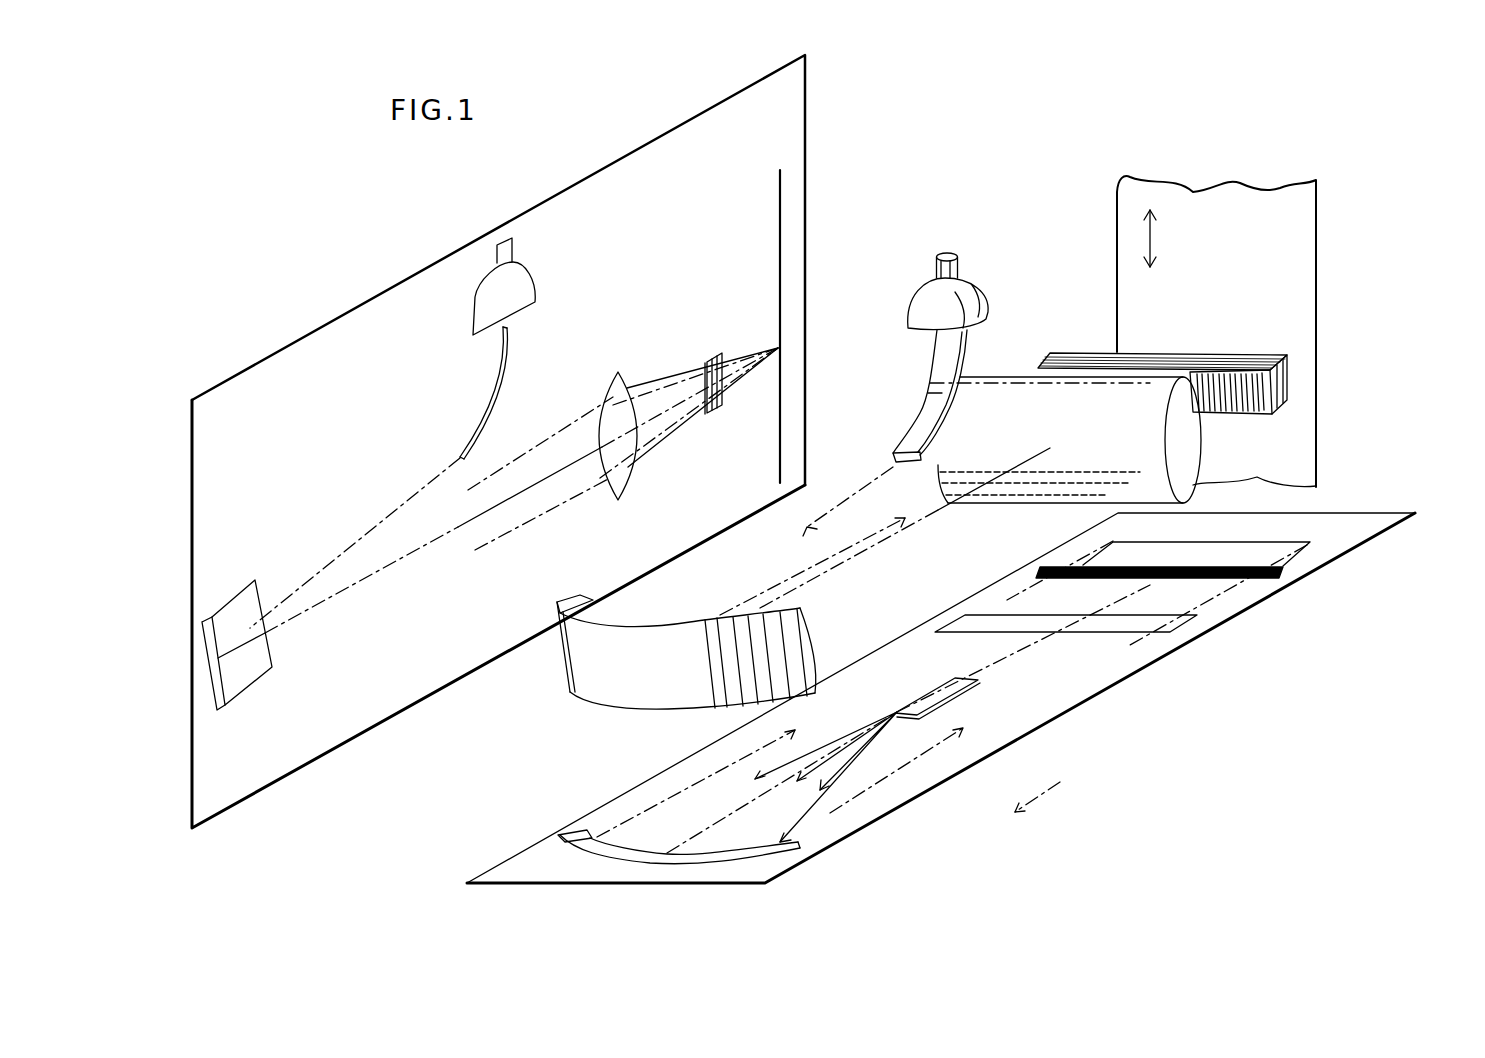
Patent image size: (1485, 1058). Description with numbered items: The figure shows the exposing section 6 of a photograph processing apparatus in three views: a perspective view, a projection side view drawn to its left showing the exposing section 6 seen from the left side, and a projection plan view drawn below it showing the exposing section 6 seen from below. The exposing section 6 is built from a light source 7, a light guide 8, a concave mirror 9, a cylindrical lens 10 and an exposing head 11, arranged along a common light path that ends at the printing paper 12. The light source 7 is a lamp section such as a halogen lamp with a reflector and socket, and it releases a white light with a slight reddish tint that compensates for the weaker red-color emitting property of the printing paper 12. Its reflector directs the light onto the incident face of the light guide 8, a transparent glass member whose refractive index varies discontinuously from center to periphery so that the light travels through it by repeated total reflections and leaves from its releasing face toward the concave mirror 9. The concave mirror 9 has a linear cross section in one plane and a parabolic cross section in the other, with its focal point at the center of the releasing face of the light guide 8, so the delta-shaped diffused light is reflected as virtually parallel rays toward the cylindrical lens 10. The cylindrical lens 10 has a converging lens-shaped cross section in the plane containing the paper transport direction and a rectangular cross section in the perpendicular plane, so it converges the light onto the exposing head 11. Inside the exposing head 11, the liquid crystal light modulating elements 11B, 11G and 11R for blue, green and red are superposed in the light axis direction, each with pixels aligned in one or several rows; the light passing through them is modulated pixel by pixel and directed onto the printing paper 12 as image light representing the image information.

The exposing section 6 is at (972, 178).
The light source 7 is at (480, 312).
The light guide 8 is at (487, 405).
The concave mirror 9 is at (223, 603).
The cylindrical lens 10 is at (618, 372).
The exposing head 11 is at (713, 352).
The red light modulating element 11R is at (1287, 368).
The green light modulating element 11G is at (1283, 387).
The blue light modulating element 11B is at (1287, 400).
The printing paper 12 is at (780, 200).